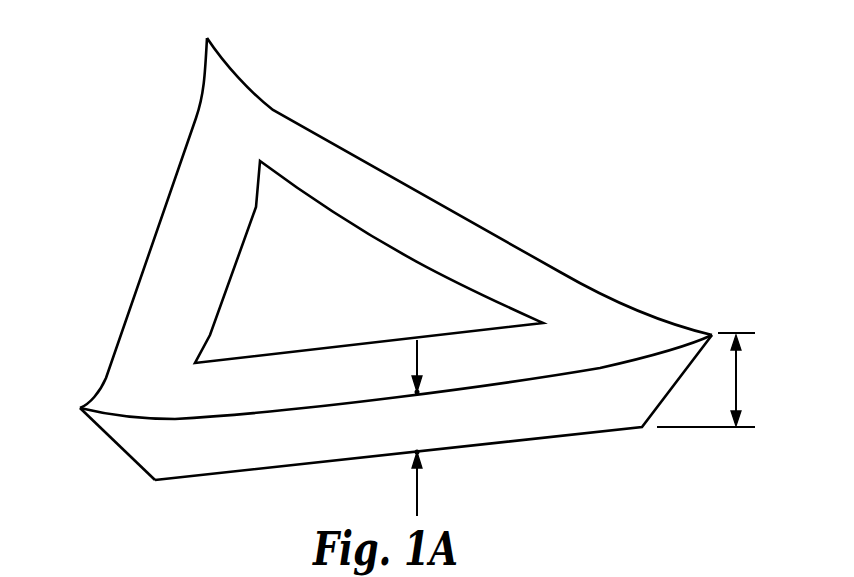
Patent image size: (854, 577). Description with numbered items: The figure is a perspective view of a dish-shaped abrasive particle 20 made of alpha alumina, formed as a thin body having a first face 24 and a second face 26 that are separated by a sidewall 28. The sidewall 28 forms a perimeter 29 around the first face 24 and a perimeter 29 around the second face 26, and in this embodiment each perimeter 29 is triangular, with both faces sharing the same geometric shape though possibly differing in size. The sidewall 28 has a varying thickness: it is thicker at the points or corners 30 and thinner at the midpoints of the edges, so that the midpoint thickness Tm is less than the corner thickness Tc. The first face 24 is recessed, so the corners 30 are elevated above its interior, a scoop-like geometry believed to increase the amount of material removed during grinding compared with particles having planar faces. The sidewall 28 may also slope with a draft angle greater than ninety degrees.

The dish-shaped abrasive particle 20 is at (390, 269).
The first face 24 is at (417, 282).
The second face 26 is at (257, 472).
The sidewall 28 is at (538, 263).
The perimeter 29 is at (162, 226).
The points or corners 30 is at (208, 40).
The thickness at the corners Tc is at (738, 383).
The thickness at the midpoints of the edges Tm is at (420, 489).